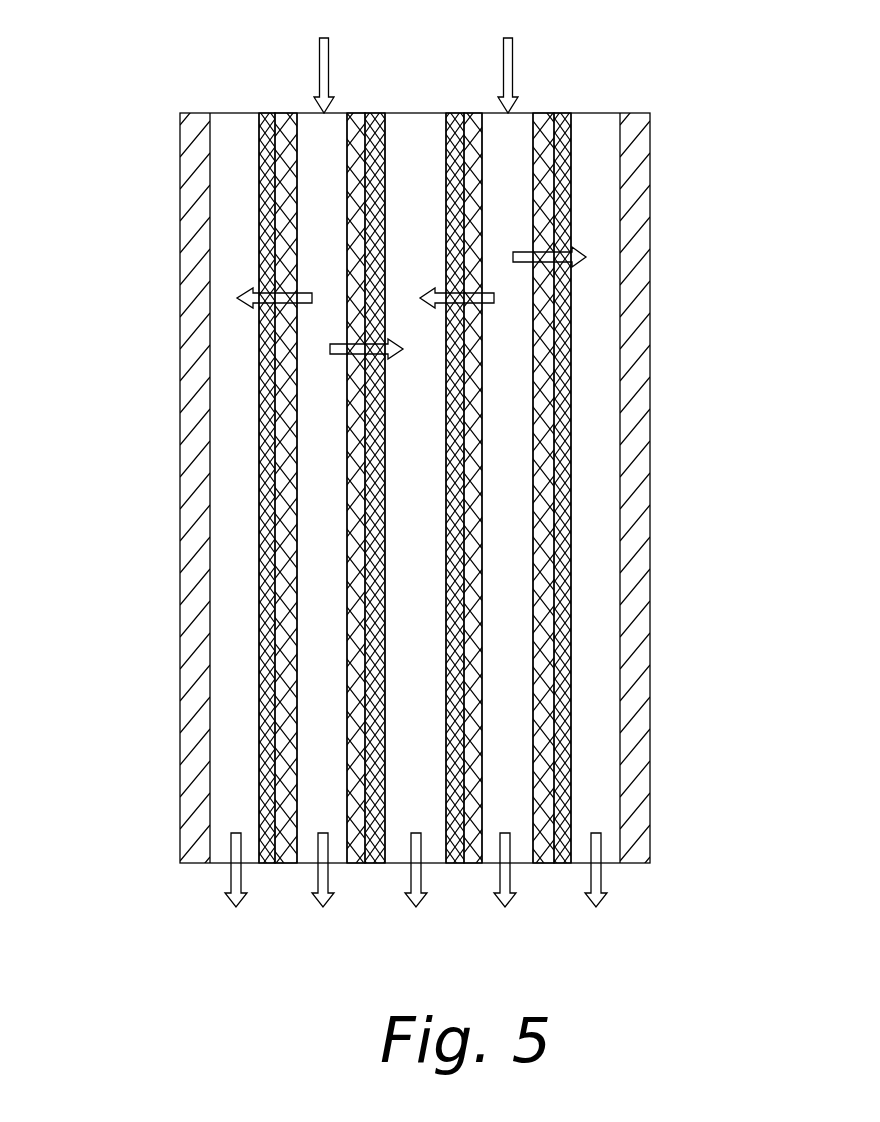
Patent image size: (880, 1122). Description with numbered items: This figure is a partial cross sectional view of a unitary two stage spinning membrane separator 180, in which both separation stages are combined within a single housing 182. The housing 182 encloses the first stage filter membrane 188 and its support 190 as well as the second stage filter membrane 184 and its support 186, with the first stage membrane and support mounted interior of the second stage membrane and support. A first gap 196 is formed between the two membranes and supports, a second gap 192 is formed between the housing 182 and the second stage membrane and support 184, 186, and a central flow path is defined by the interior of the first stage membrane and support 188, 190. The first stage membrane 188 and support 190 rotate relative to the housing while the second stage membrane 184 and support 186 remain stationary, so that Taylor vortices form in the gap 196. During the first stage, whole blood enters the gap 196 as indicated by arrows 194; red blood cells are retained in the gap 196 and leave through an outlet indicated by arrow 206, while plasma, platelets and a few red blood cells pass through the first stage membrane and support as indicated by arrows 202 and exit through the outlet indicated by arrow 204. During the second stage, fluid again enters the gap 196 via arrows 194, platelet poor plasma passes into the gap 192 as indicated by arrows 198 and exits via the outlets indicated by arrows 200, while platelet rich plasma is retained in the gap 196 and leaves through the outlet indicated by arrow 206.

The unitary two stage spinning membrane separator 180 is at (118, 446).
The housing 182 is at (180, 155).
The second stage filter membrane 184 is at (290, 113).
The second stage support 186 is at (268, 113).
The first stage filter membrane 188 is at (357, 113).
The first stage support 190 is at (376, 113).
The second gap 192 is at (230, 219).
The arrows indicating inflow 194 is at (417, 61).
The first gap 196 is at (312, 555).
The arrows indicating flow into second gap 198 is at (237, 297).
The arrows indicating second gap outlet flow 200 is at (416, 882).
The arrows indicating flow through first stage membrane 202 is at (330, 344).
The arrow indicating central flow path outlet 204 is at (415, 522).
The arrow indicating first gap outlet 206 is at (414, 882).